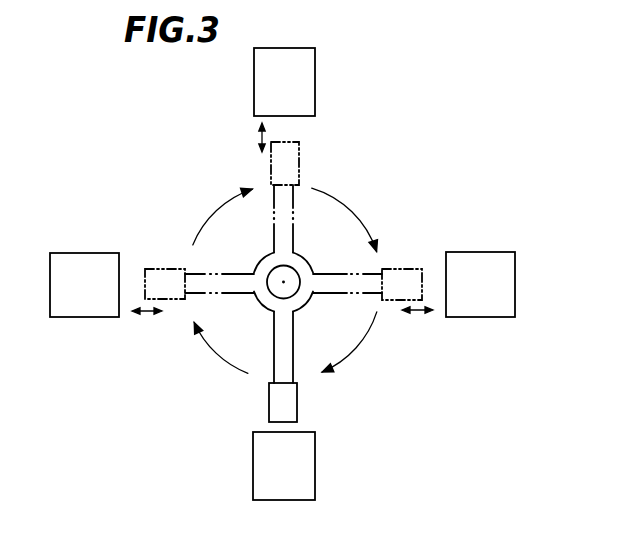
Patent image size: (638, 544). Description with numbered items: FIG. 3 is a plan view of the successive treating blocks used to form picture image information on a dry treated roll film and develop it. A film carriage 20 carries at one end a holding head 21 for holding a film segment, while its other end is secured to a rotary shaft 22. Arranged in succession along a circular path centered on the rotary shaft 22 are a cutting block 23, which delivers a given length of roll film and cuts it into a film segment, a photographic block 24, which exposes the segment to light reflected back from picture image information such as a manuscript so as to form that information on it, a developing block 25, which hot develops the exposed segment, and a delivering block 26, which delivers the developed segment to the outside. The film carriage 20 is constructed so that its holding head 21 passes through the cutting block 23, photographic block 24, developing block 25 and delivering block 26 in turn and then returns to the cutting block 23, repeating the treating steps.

The film carriage 20 is at (287, 350).
The holding head 21 is at (292, 407).
The rotary shaft 22 is at (285, 281).
The cutting block 23 is at (265, 465).
The photographic block 24 is at (117, 230).
The developing block 25 is at (315, 83).
The delivering block 26 is at (473, 262).